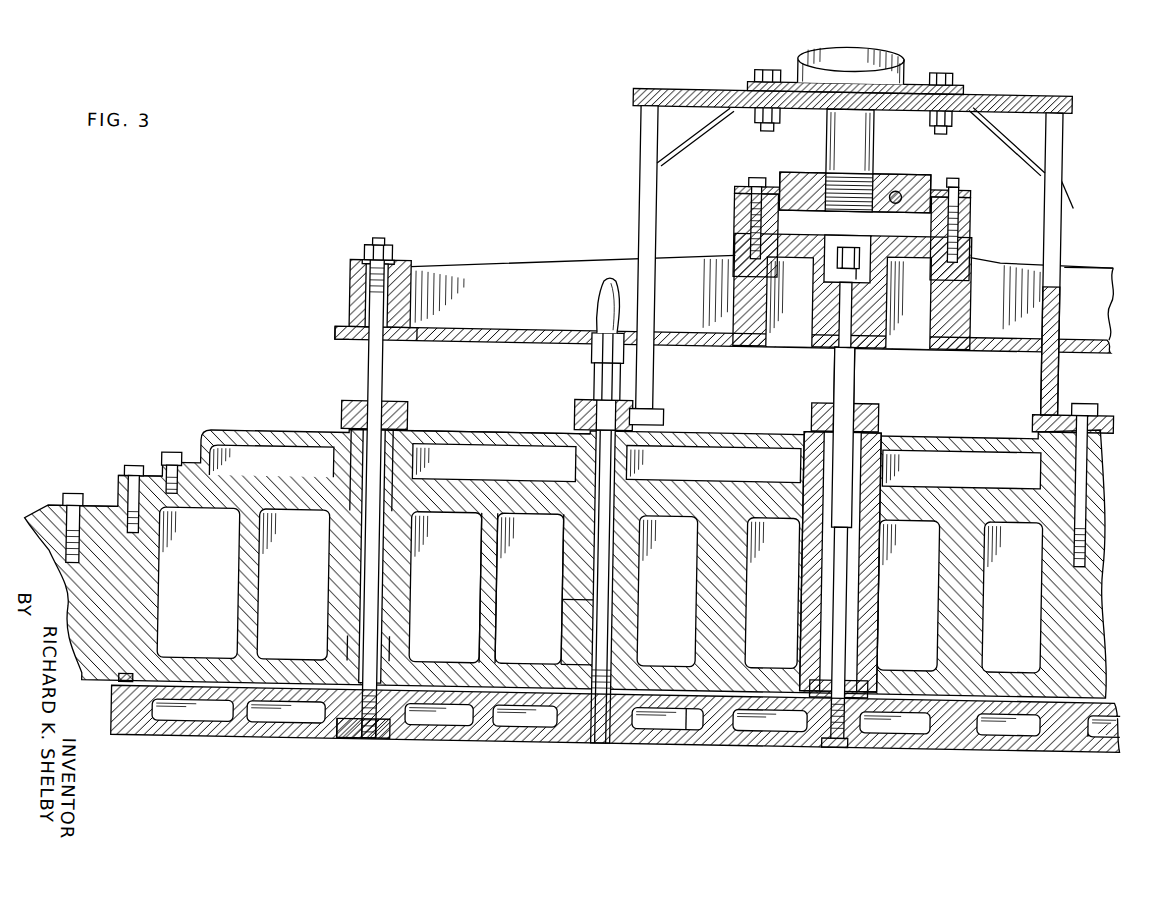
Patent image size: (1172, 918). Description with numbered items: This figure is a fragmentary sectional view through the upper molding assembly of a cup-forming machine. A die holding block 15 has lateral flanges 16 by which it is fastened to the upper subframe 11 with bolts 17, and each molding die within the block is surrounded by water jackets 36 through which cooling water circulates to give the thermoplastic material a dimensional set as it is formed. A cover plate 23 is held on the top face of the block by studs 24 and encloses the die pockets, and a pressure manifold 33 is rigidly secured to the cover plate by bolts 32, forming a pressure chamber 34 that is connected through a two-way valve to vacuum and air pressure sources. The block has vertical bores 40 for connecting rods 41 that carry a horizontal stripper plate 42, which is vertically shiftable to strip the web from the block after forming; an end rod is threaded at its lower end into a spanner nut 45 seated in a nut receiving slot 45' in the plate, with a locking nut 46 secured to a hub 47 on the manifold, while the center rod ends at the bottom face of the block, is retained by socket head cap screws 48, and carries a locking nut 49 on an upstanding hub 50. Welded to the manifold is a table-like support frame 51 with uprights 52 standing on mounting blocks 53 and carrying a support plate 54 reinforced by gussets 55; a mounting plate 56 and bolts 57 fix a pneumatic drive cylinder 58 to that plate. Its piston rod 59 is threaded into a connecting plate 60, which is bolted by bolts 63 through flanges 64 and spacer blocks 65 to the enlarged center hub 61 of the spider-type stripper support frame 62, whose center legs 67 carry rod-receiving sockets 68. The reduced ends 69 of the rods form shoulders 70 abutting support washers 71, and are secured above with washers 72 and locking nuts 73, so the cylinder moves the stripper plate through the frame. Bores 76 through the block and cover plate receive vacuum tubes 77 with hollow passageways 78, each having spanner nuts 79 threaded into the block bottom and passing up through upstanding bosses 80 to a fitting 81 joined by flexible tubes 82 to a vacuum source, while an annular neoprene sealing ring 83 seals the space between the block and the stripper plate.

The upper subframe 11 is at (45, 530).
The die holding block 15 is at (100, 509).
The lateral flanges 16 is at (45, 515).
The bolts 17 is at (72, 501).
The cover plate 23 is at (239, 451).
The studs 24 is at (133, 473).
The bolts 32 is at (174, 459).
The pressure manifold 33 is at (479, 438).
The pressure chamber 34 is at (509, 457).
The water jackets 36 is at (217, 617).
The vertical bores 40 is at (395, 659).
The connecting rods 41 is at (491, 582).
The stripper plate 42 is at (769, 742).
The spanner nut 45 is at (341, 744).
The nut receiving slot 45' is at (384, 743).
The locking nut 46 is at (400, 418).
The hub 47 is at (346, 434).
The socket head cap screws 48 is at (834, 741).
The locking nut 49 is at (813, 406).
The upstanding hub 50 is at (884, 428).
The table-like support frame 51 is at (1060, 220).
The uprights 52 is at (635, 199).
The mounting blocks 53 is at (1098, 406).
The support plate 54 is at (1053, 89).
The gussets 55 is at (1037, 142).
The mounting plate 56 is at (956, 83).
The bolts 57 is at (944, 66).
The pneumatic drive cylinder 58 is at (792, 58).
The piston rod 59 is at (824, 144).
The connecting plate 60 is at (894, 173).
The enlarged center hub 61 is at (967, 241).
The stripper support frame 62 is at (1109, 291).
The bolts 63 is at (954, 186).
The flanges 64 is at (739, 182).
The spacer blocks 65 is at (731, 210).
The center legs 67 is at (566, 263).
The rod-receiving sockets 68 is at (346, 286).
The reduced ends 69 is at (381, 246).
The shoulders 70 is at (342, 347).
The support washers 71 is at (387, 347).
The washers 72 is at (391, 270).
The locking nuts 73 is at (362, 254).
The bores 76 is at (586, 553).
The vacuum tubes 77 is at (591, 578).
The hollow passageways 78 is at (604, 612).
The spanner nuts 79 is at (614, 742).
The upstanding bosses 80 is at (577, 430).
The fitting 81 is at (590, 378).
The flexible tubes 82 is at (594, 295).
The annular neoprene sealing ring 83 is at (123, 692).